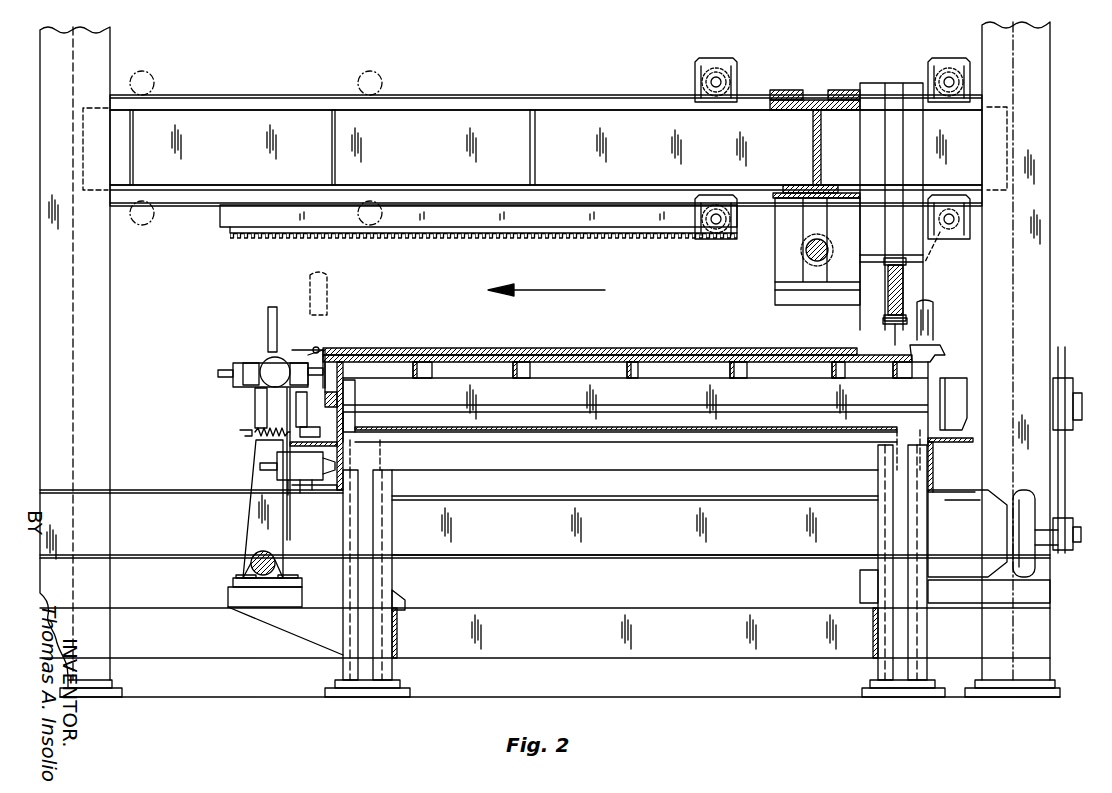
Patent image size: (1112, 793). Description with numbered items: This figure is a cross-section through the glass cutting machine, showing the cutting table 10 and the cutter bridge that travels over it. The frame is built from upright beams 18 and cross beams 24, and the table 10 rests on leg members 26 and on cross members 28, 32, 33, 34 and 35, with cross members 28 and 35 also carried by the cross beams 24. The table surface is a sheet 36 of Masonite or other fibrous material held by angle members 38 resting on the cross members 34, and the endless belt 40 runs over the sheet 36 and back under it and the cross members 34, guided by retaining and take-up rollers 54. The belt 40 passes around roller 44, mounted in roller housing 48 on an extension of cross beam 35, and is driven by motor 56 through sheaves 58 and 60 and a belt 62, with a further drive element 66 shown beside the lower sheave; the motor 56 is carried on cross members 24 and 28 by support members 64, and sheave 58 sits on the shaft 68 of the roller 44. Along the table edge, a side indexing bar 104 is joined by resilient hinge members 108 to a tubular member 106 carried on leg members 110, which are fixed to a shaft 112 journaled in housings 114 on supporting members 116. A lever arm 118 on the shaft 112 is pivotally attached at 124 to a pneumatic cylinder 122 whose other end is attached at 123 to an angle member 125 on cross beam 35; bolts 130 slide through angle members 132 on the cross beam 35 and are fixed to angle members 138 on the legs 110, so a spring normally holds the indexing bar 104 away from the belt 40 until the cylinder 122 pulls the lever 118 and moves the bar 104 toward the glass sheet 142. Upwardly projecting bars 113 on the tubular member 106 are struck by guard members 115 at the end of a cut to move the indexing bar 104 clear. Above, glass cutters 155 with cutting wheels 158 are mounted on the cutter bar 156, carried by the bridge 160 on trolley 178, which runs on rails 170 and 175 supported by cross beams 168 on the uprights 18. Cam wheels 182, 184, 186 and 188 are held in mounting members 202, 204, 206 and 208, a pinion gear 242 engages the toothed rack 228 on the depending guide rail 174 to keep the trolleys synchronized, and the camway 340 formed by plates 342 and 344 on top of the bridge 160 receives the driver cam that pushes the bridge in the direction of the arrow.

The cutting table 10 is at (660, 344).
The upright beams 18 is at (40, 248).
The cross beams 24 is at (592, 622).
The leg members 26 is at (350, 578).
The cross members 28 is at (343, 636).
The cross members 32 is at (514, 466).
The cross members 33 is at (345, 372).
The cross members 34 is at (628, 405).
The cross members 35 is at (345, 457).
The sheet 36 is at (468, 370).
The angle members 38 is at (700, 374).
The endless belt 40 is at (580, 370).
The roller 44 is at (780, 440).
The roller housing 48 is at (346, 385).
The retaining and take-up rollers 54 is at (626, 500).
The motor 56 is at (1030, 510).
The sheave 58 is at (1064, 377).
The sheave 60 is at (1055, 564).
The belt 62 is at (1064, 462).
The support members 64 is at (1044, 595).
The lower pulley 66 is at (1072, 542).
The shaft 68 is at (1082, 410).
The side indexing bar 104 is at (372, 336).
The tubular member 106 is at (270, 358).
The resilient hinge members 108 is at (338, 328).
The leg members 110 is at (258, 398).
The shaft 112 is at (250, 566).
The upwardly projecting bars 113 is at (268, 312).
The housings 114 is at (233, 586).
The guard members 115 is at (884, 320).
The supporting members 116 is at (232, 610).
The lever arm 118 is at (258, 531).
The pneumatic cylinder 122 is at (290, 488).
The pivotal attachment 123 is at (312, 483).
The pivotal attachment 124 is at (260, 467).
The angle member 125 is at (300, 486).
The bolts 130 is at (258, 426).
The angle members 132 is at (303, 420).
The angle members 138 is at (240, 436).
The glass sheet 142 is at (727, 348).
The glass cutters 155 is at (936, 318).
The cutter bar 156 is at (328, 279).
The glass cutting wheels 158 is at (893, 352).
The bridge 160 is at (821, 140).
The cross beams 168 is at (487, 126).
The rail 170 is at (568, 97).
The guide rail 174 is at (558, 228).
The rail 175 is at (189, 206).
The trolley 178 is at (745, 115).
The cam wheel 182 is at (970, 44).
The cam wheel 184 is at (697, 68).
The cam wheel 186 is at (945, 255).
The cam wheel 188 is at (722, 240).
The mounting member 202 is at (940, 58).
The mounting member 204 is at (716, 58).
The mounting member 206 is at (955, 205).
The mounting member 208 is at (700, 242).
The toothed rack 228 is at (248, 240).
The pinion gear 242 is at (806, 254).
The camway 340 is at (827, 90).
The plate 342 is at (794, 84).
The plate 344 is at (770, 110).